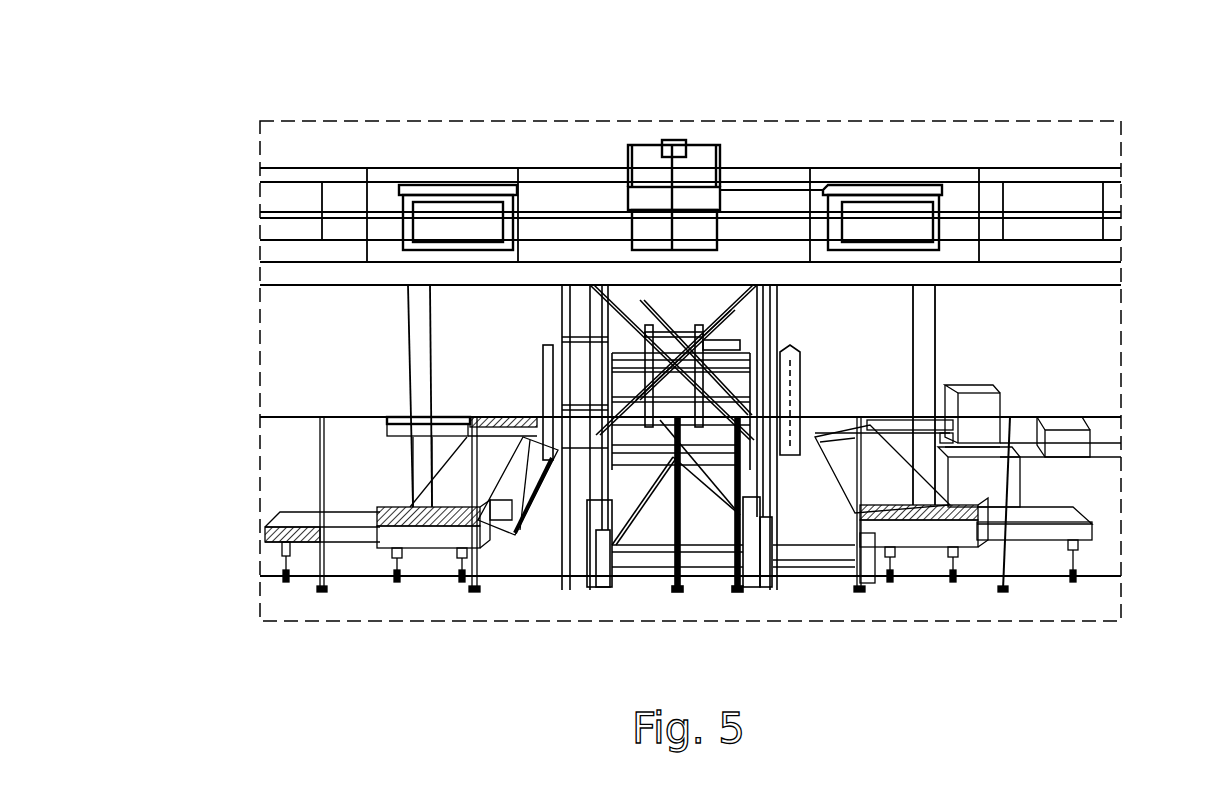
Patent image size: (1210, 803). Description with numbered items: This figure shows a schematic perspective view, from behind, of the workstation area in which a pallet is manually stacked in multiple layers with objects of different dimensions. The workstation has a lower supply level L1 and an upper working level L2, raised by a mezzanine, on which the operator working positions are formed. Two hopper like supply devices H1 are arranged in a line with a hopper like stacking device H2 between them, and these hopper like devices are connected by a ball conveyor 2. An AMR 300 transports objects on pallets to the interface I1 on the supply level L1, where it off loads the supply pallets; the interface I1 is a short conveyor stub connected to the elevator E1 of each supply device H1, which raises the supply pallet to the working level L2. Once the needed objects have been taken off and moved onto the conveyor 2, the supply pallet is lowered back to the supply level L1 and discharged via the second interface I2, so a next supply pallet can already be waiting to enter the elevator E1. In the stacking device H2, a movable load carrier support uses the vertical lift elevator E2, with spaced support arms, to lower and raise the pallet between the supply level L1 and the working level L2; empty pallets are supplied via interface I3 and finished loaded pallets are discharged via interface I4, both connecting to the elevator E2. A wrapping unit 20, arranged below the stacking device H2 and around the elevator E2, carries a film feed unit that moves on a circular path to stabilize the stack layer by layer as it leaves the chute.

The upper working level L2 is at (290, 112).
The lower supply level L1 is at (418, 614).
The hopper like supply device H1 is at (443, 155).
The hopper like stacking device H2 is at (638, 140).
The ball conveyor 2 is at (760, 182).
The elevator E1 is at (400, 332).
The vertical lift elevator E2 is at (674, 455).
The interface I1 is at (298, 525).
The second interface I2 is at (380, 432).
The interface I3 is at (549, 592).
The interface I4 is at (827, 592).
The wrapping unit 20 is at (757, 433).
The AMR 300 is at (978, 415).